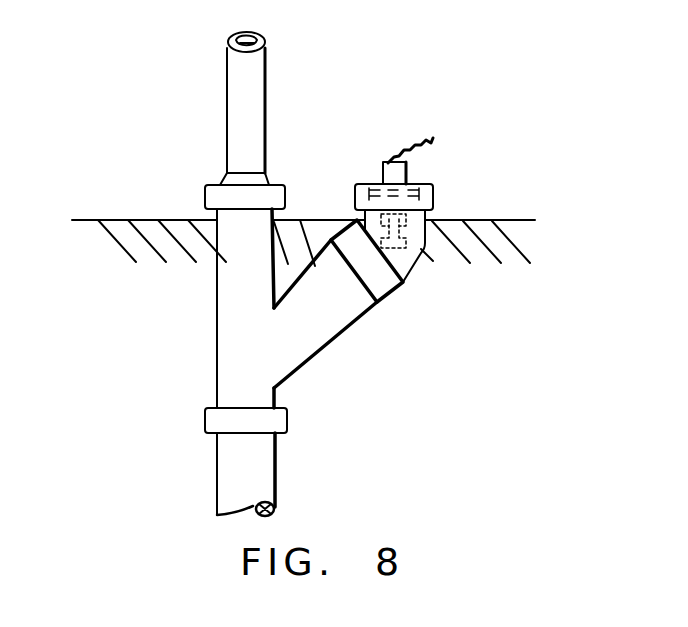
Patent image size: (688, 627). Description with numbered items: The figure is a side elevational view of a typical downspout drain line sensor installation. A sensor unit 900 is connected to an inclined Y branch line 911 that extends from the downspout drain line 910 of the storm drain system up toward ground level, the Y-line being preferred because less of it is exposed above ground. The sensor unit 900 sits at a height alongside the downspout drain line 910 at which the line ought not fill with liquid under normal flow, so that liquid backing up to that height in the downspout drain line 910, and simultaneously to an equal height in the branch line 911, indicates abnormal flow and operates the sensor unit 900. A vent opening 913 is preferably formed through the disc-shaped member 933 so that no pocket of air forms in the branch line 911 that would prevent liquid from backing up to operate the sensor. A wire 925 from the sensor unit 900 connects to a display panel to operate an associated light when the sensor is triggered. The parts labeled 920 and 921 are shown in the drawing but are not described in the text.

The sensor unit 900 is at (446, 188).
The downspout drain line 910 is at (253, 480).
The Y branch line 911 is at (335, 311).
The vent opening 913 is at (415, 167).
The valve body 920 is at (406, 238).
The flange plate 921 is at (377, 184).
The wire 925 is at (430, 140).
The disc-shaped member 933 is at (353, 182).